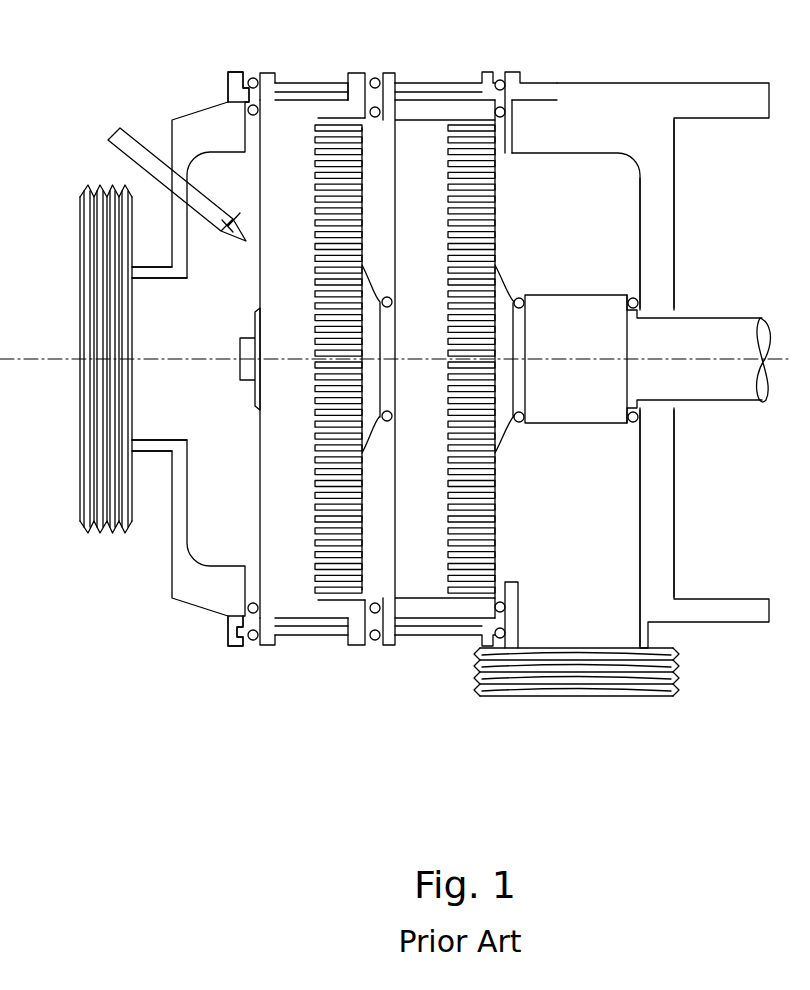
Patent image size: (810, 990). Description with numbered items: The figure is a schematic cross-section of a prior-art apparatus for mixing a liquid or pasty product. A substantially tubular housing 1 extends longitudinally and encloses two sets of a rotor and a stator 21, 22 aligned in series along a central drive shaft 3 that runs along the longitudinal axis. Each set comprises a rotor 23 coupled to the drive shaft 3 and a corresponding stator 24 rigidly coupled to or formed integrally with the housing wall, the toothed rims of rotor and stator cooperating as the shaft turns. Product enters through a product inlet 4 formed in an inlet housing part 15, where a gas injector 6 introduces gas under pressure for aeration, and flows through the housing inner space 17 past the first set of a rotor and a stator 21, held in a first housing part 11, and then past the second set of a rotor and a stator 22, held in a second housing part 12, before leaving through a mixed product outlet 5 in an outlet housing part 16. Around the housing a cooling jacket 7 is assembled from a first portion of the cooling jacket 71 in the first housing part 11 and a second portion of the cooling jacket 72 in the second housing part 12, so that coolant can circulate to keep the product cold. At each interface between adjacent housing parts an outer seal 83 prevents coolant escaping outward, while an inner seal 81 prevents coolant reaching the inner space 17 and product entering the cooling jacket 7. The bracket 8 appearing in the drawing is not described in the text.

The housing 1 is at (608, 100).
The central drive shaft 3 is at (720, 340).
The product inlet 4 is at (80, 410).
The mixed product outlet 5 is at (598, 698).
The gas injector 6 is at (122, 132).
The cooling jacket 7 is at (270, 650).
The bearing bracket 8 is at (236, 604).
The first housing part 11 is at (355, 72).
The second housing part 12 is at (389, 72).
The inlet housing part 15 is at (182, 579).
The outlet housing part 16 is at (658, 563).
The housing inner space 17 is at (590, 218).
The first set of a rotor and a stator 21 is at (290, 146).
The second set of a rotor and a stator 22 is at (418, 130).
The rotor 23 is at (497, 136).
The stator 24 is at (460, 110).
The first portion of the cooling jacket 71 is at (322, 637).
The second portion of the cooling jacket 72 is at (436, 637).
The inner seal 81 is at (372, 640).
The outer seal 83 is at (250, 76).